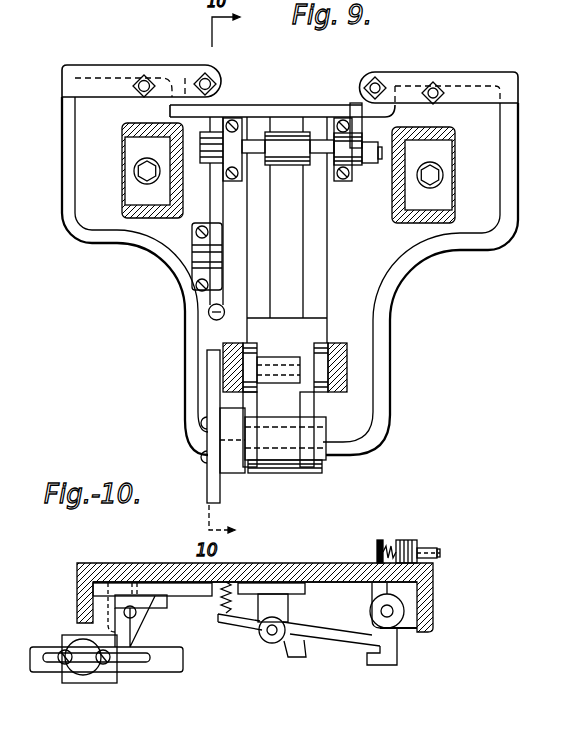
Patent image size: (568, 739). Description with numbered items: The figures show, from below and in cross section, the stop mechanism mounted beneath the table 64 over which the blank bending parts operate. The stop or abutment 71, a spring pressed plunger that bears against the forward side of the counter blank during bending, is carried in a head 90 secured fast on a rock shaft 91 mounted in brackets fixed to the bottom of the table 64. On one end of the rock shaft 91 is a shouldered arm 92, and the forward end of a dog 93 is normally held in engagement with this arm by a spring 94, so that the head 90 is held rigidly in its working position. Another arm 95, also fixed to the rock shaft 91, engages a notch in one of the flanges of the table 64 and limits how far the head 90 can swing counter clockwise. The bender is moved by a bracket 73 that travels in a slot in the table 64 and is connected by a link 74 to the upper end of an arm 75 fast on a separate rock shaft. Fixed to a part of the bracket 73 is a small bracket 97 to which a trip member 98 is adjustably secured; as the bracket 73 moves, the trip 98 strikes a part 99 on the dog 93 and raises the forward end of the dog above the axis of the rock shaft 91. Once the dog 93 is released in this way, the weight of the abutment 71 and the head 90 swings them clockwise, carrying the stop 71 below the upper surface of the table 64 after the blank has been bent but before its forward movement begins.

In FIG. 9, the table 64 is at (397, 250).
In FIG. 10, the table 64 is at (314, 567).
In FIG. 10, the stop or abutment 71 is at (380, 540).
In FIG. 9, the bracket 73 is at (318, 323).
In FIG. 9, the link 74 is at (285, 392).
In FIG. 9, the arm 75 is at (325, 343).
In FIG. 9, the head 90 is at (288, 167).
In FIG. 10, the head 90 is at (420, 544).
In FIG. 9, the rock shaft 91 is at (318, 150).
In FIG. 10, the rock shaft 91 is at (389, 610).
In FIG. 9, the shouldered arm 92 is at (213, 148).
In FIG. 10, the shouldered arm 92 is at (398, 656).
In FIG. 9, the dog 93 is at (215, 210).
In FIG. 10, the dog 93 is at (342, 636).
In FIG. 10, the spring 94 is at (222, 597).
In FIG. 9, the arm 95 is at (360, 107).
In FIG. 10, the arm 95 is at (408, 627).
In FIG. 9, the small bracket 97 is at (227, 425).
In FIG. 10, the small bracket 97 is at (108, 600).
In FIG. 9, the trip member 98 is at (213, 367).
In FIG. 10, the trip member 98 is at (163, 667).
In FIG. 10, the part on the dog 99 is at (295, 653).